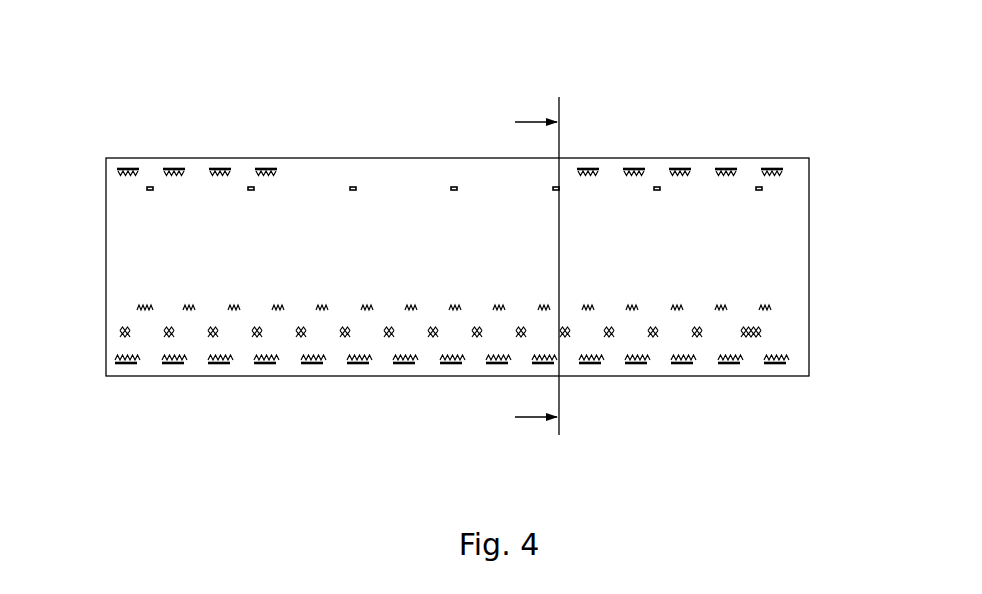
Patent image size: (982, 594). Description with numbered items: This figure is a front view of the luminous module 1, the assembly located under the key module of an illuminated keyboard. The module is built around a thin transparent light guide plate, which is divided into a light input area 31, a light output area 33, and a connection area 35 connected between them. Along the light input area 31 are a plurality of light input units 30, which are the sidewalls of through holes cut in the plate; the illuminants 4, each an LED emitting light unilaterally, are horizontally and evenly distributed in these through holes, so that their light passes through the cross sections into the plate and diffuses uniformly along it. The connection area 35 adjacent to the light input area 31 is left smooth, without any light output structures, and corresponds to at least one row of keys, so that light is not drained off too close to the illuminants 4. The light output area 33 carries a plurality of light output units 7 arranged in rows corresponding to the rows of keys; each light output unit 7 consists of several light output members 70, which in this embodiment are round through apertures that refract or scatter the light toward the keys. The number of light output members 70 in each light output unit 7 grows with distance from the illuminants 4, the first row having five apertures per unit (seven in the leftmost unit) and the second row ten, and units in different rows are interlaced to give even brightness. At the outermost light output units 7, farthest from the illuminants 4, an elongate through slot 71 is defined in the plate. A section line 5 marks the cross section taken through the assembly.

The luminous module 1 is at (322, 147).
The illuminant 4 is at (146, 188).
The section line 5- 5 is at (534, 268).
The light output unit 7 is at (134, 307).
The light input unit 30 is at (248, 187).
The light input area 31 is at (471, 156).
The light output area 33 is at (464, 335).
The connection area 35 is at (797, 257).
The light output member 70 is at (148, 308).
The elongate through slot 71 is at (120, 364).